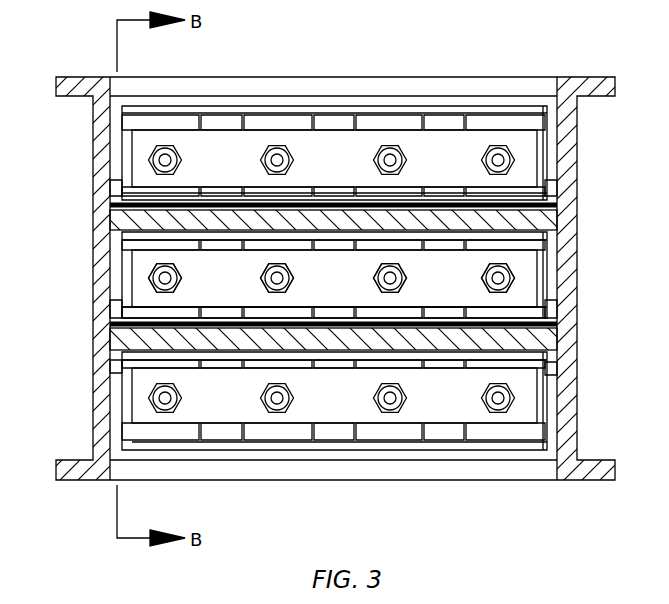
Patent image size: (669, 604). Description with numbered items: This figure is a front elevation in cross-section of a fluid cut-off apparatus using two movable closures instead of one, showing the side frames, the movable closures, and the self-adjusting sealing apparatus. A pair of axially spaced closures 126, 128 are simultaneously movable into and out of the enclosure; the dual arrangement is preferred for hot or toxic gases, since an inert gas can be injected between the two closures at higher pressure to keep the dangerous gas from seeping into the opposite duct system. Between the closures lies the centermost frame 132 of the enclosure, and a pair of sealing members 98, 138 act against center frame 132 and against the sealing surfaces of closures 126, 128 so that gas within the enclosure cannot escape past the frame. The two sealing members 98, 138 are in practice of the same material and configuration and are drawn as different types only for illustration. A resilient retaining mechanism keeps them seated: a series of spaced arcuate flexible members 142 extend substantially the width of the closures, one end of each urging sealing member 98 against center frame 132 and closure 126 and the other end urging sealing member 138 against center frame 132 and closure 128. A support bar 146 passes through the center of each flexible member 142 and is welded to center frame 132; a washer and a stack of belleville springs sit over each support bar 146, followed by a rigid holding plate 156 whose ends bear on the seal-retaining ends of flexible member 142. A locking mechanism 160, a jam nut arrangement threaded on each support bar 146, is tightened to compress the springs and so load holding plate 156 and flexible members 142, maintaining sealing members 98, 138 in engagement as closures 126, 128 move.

The sealing member 98 is at (562, 234).
The closure 126 is at (545, 222).
The closure 128 is at (543, 342).
The center frame 132 is at (551, 277).
The sealing member 138 is at (553, 312).
The flexible member 142 is at (490, 312).
The support bar 146 is at (500, 276).
The rigid holding plate 156 is at (231, 276).
The locking mechanism 160 is at (511, 272).